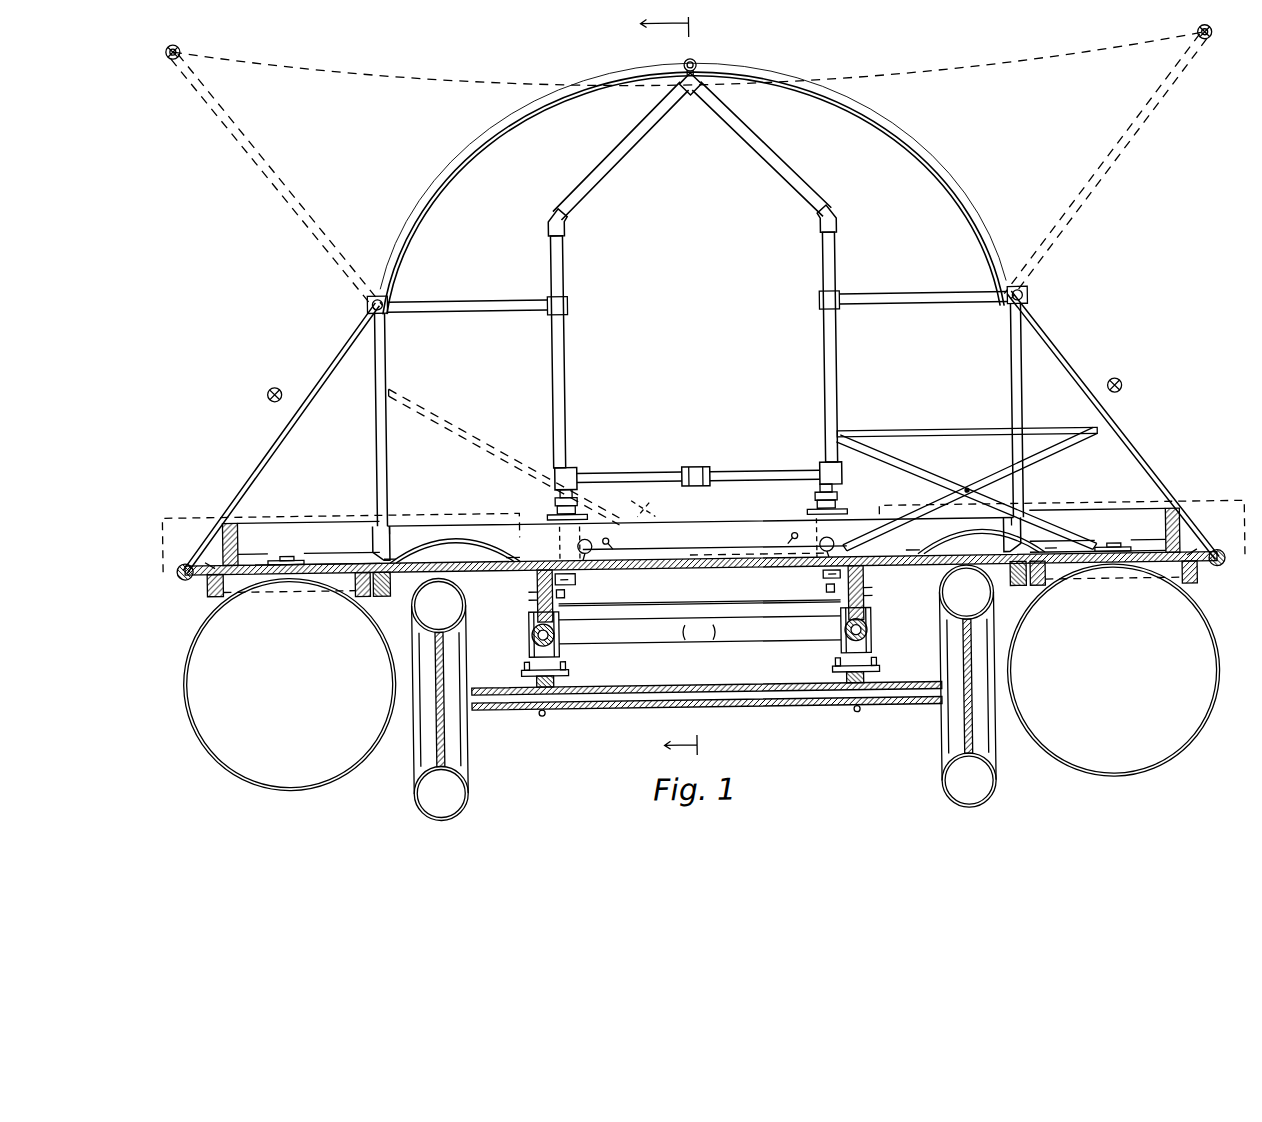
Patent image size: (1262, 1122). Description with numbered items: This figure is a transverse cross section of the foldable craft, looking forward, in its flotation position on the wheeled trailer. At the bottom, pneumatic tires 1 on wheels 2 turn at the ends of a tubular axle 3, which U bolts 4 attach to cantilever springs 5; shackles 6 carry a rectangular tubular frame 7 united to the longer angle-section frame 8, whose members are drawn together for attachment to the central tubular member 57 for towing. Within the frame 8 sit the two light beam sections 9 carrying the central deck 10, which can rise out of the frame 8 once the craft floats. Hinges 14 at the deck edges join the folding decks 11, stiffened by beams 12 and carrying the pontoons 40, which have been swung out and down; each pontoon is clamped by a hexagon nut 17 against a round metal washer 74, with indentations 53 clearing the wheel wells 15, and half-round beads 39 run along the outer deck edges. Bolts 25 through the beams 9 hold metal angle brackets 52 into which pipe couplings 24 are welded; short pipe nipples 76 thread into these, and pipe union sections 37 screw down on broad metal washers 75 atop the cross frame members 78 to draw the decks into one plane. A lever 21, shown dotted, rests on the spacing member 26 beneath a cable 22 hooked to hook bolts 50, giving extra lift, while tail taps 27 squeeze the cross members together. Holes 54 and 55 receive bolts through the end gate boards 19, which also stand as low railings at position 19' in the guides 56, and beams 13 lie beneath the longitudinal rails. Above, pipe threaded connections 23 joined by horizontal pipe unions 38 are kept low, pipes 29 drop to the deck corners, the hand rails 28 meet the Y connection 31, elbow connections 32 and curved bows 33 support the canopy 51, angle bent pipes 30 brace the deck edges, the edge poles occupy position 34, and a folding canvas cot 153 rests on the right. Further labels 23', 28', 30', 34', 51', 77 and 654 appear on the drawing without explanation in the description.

The pneumatic tire 1 is at (703, 693).
The wheel 2 is at (436, 716).
The tubular axle 3 is at (718, 686).
The U bolt 4 is at (552, 712).
The cantilever spring 5 is at (700, 668).
The shackle 6 is at (530, 638).
The rectangular frame 7 is at (738, 638).
The angle frame 8 is at (690, 614).
The beam section 9 is at (701, 595).
The central deck 10 is at (720, 557).
The folding deck 11 is at (322, 566).
The beam 12 is at (702, 579).
The beam 13 is at (699, 578).
The hinge 14 is at (699, 385).
The wheel well 15 is at (426, 553).
The hexagon nut 17 is at (703, 545).
The end gate board 19 is at (703, 536).
The end gate board position 19' is at (701, 503).
The lever 21 is at (646, 506).
The cable 22 is at (602, 500).
The pipe threaded connection 23 is at (697, 469).
The elbow fitting 23' is at (692, 274).
The pipe coupling 24 is at (565, 592).
The bolt 25 is at (699, 590).
The spacing member 26 is at (687, 546).
The tail tap 27 is at (700, 532).
The hand rail 28 is at (698, 302).
The corner fitting 28' is at (697, 307).
The pipe 29 is at (386, 360).
The angle bent pipe 30 is at (699, 430).
The extended strut 30' is at (691, 173).
The Y connection 31 is at (697, 95).
The elbow connection 32 is at (695, 57).
The curved bow 33 is at (660, 82).
The canopy edge pole position 34 is at (702, 381).
The extended ring 34' is at (689, 35).
The pipe union 37 is at (843, 498).
The horizontal pipe union 38 is at (712, 466).
The half-round bead 39 is at (704, 566).
The pontoon 40 is at (278, 687).
The hook bolt 50 is at (704, 547).
The canopy 51 is at (690, 191).
The extended cable 51' is at (689, 62).
The metal angle bracket 52 is at (578, 576).
The indentation 53 is at (702, 577).
The hole 54 is at (1007, 534).
The hole 55 is at (701, 551).
The guide 56 is at (701, 533).
The central tubular member 57 is at (699, 632).
The round metal washer 74 is at (699, 551).
The broad metal washer 75 is at (552, 519).
The pipe nipple 76 is at (566, 534).
The platform section 77 is at (470, 545).
The cross frame member 78 is at (312, 555).
The folding canvas cot 153 is at (980, 446).
The end block 654 is at (391, 543).